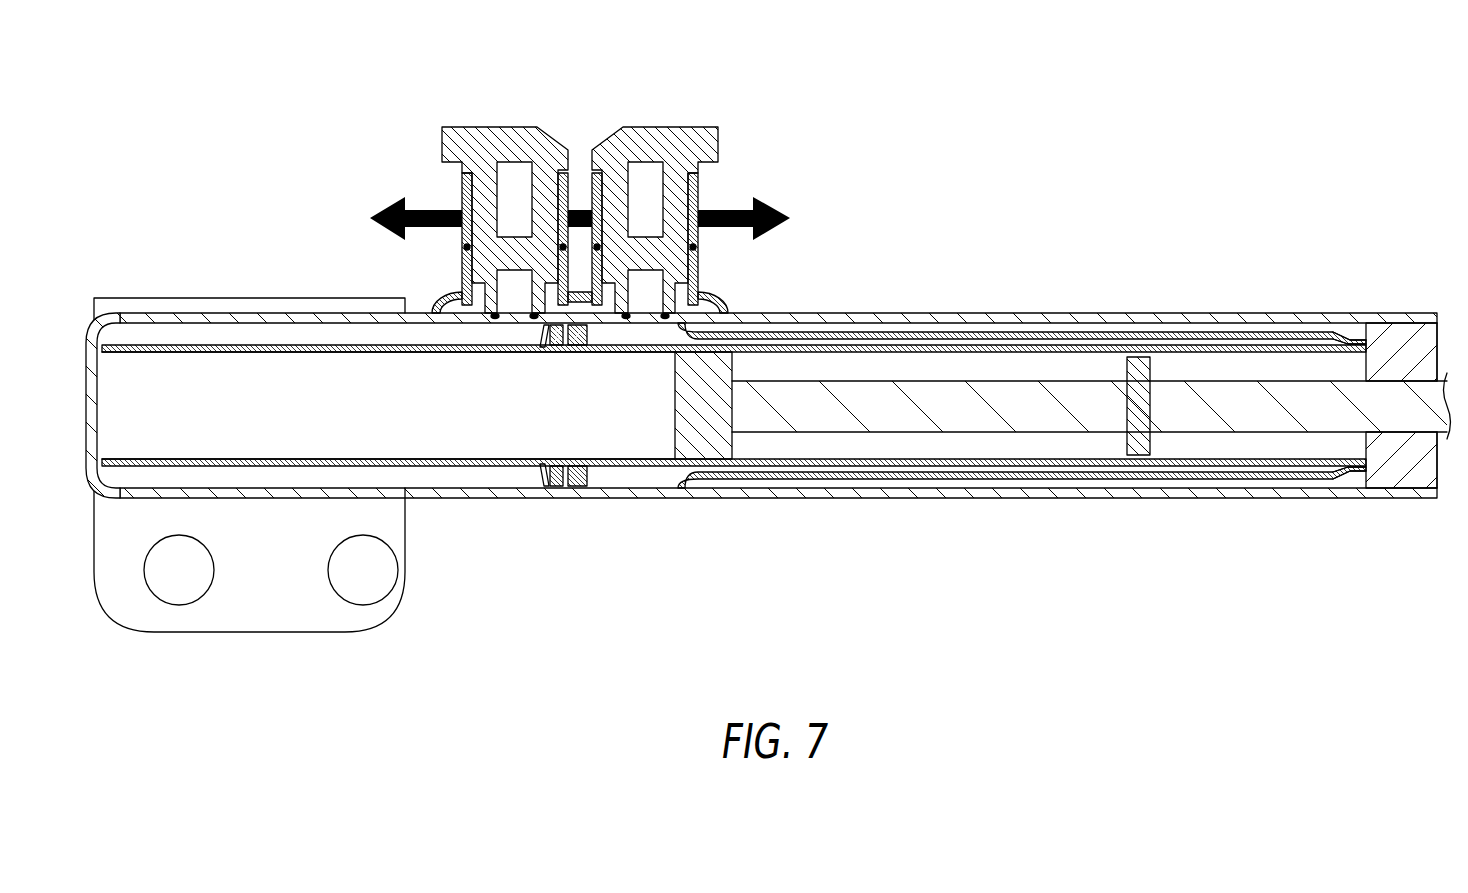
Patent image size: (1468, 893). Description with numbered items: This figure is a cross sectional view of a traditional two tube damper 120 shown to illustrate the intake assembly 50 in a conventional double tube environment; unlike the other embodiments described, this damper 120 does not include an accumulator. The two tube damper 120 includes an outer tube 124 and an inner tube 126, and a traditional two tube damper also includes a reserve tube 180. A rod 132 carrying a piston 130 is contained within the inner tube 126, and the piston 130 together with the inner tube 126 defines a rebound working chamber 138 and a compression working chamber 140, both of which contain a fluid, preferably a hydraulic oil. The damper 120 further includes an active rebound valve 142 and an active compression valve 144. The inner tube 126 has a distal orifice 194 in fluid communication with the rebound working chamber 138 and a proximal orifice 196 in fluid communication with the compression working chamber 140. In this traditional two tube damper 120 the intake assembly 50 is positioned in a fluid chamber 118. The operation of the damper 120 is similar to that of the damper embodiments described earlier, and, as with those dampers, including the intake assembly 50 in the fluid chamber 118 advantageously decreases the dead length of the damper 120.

The two tube damper 120 is at (1008, 96).
The fluid chamber 118 is at (484, 477).
The outer tube 124 is at (1125, 313).
The inner tube 126 is at (1000, 330).
The reserve tube 180 is at (907, 330).
The distal orifice 194 is at (1303, 330).
The proximal orifice 196 is at (123, 345).
The compression working chamber 140 is at (444, 419).
The piston 130 is at (702, 432).
The rebound working chamber 138 is at (938, 440).
The rod 132 is at (1230, 413).
The intake assembly 50 is at (599, 481).
The active rebound valve 142 is at (673, 126).
The active compression valve 144 is at (473, 126).